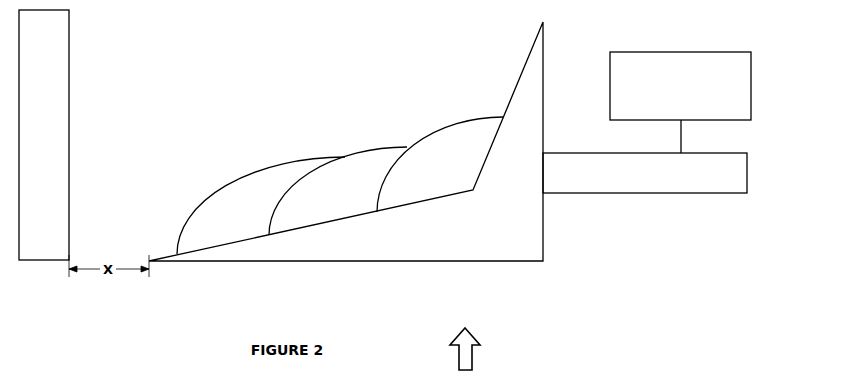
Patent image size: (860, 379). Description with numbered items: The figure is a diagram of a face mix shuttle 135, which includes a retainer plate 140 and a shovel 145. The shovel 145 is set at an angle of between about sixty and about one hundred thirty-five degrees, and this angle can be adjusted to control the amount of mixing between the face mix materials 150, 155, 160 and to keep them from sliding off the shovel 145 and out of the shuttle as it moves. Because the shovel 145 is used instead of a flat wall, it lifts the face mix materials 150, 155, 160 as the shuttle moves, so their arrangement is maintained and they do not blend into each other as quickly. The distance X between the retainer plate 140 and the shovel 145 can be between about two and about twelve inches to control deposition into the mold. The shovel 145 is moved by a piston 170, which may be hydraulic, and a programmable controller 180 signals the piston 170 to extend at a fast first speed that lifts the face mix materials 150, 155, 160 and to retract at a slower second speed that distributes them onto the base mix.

The face mix shuttle 135 is at (447, 349).
The retainer plate 140 is at (31, 144).
The shovel 145 is at (452, 253).
The face mix material 150 is at (261, 205).
The face mix material 155 is at (338, 191).
The face mix material 160 is at (440, 164).
The piston 170 is at (691, 182).
The controller 180 is at (667, 106).